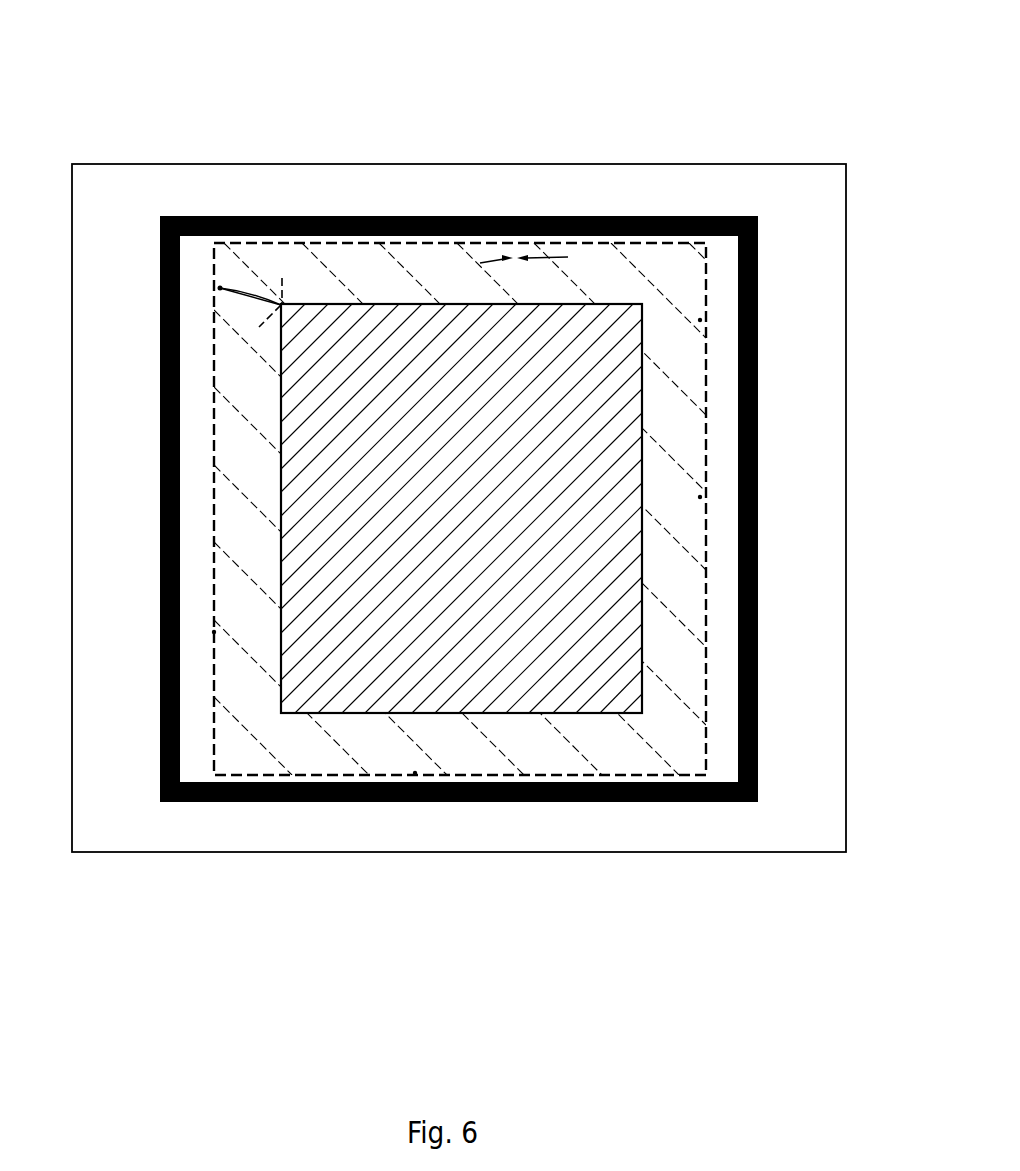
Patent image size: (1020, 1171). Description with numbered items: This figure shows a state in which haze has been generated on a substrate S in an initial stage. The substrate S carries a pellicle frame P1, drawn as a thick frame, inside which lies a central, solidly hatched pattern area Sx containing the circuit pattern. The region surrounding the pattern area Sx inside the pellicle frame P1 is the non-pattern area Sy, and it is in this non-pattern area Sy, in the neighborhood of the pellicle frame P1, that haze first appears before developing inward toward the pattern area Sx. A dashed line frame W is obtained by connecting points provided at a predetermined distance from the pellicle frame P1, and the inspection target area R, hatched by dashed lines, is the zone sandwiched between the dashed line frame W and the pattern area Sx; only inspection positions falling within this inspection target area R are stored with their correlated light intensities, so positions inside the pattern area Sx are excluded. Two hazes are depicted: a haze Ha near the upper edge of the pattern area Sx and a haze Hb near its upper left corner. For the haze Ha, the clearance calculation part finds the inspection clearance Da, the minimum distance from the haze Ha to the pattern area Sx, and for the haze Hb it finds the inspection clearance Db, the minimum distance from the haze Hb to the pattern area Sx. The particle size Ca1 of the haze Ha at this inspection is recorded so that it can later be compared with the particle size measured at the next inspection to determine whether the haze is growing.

The substrate S is at (845, 140).
The pellicle frame P1 is at (650, 208).
The dashed line frame W is at (708, 364).
The inspection target area R is at (682, 459).
The pattern area Sx is at (461, 331).
The non-pattern area Sy is at (328, 262).
The haze Ha is at (518, 304).
The haze Hb is at (220, 288).
The inspection clearance Da is at (540, 283).
The inspection clearance Db is at (251, 297).
The particle size Ca1 is at (545, 260).